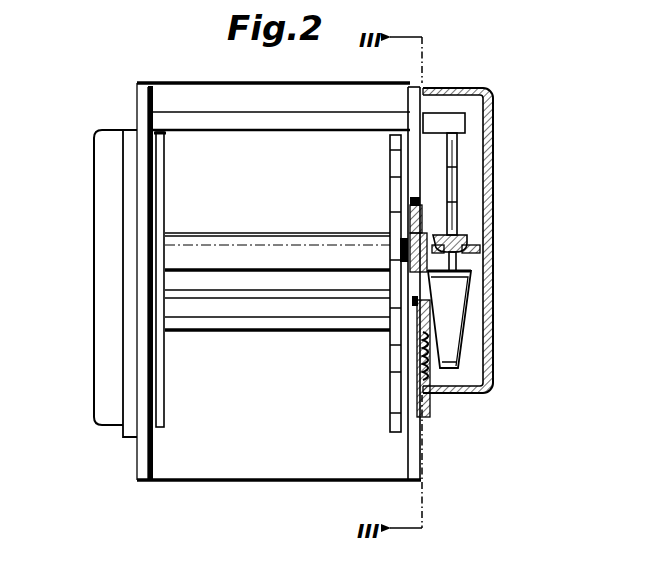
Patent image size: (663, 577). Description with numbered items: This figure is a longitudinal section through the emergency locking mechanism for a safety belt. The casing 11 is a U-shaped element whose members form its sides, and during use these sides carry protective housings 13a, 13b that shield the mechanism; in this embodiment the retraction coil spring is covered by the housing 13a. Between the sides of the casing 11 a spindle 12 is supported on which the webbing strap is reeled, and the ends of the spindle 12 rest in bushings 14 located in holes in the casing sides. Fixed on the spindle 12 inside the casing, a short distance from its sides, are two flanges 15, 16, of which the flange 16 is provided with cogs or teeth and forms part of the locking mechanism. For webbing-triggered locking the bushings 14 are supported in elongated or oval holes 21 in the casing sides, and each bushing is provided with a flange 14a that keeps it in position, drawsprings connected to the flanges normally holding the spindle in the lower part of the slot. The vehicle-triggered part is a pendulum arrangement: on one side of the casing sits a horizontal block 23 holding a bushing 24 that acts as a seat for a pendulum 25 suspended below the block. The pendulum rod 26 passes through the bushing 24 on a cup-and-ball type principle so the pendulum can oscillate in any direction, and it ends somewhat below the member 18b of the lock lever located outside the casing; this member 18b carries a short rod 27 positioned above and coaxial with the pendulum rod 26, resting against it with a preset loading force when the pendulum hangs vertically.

The casing 11 is at (210, 91).
The spindle 12 is at (245, 312).
The protective housing 13a is at (106, 226).
The protective housing 13b is at (490, 372).
The bushing 14 is at (388, 240).
The bushing flange 14a is at (425, 325).
The flange 15 is at (163, 213).
The toothed flange 16 is at (393, 160).
The lock lever member 18b is at (434, 122).
The elongated hole 21 is at (394, 237).
The horizontal block 23 is at (470, 246).
The bushing 24 is at (473, 237).
The pendulum 25 is at (447, 325).
The pendulum rod 26 is at (449, 203).
The short rod 27 is at (451, 148).